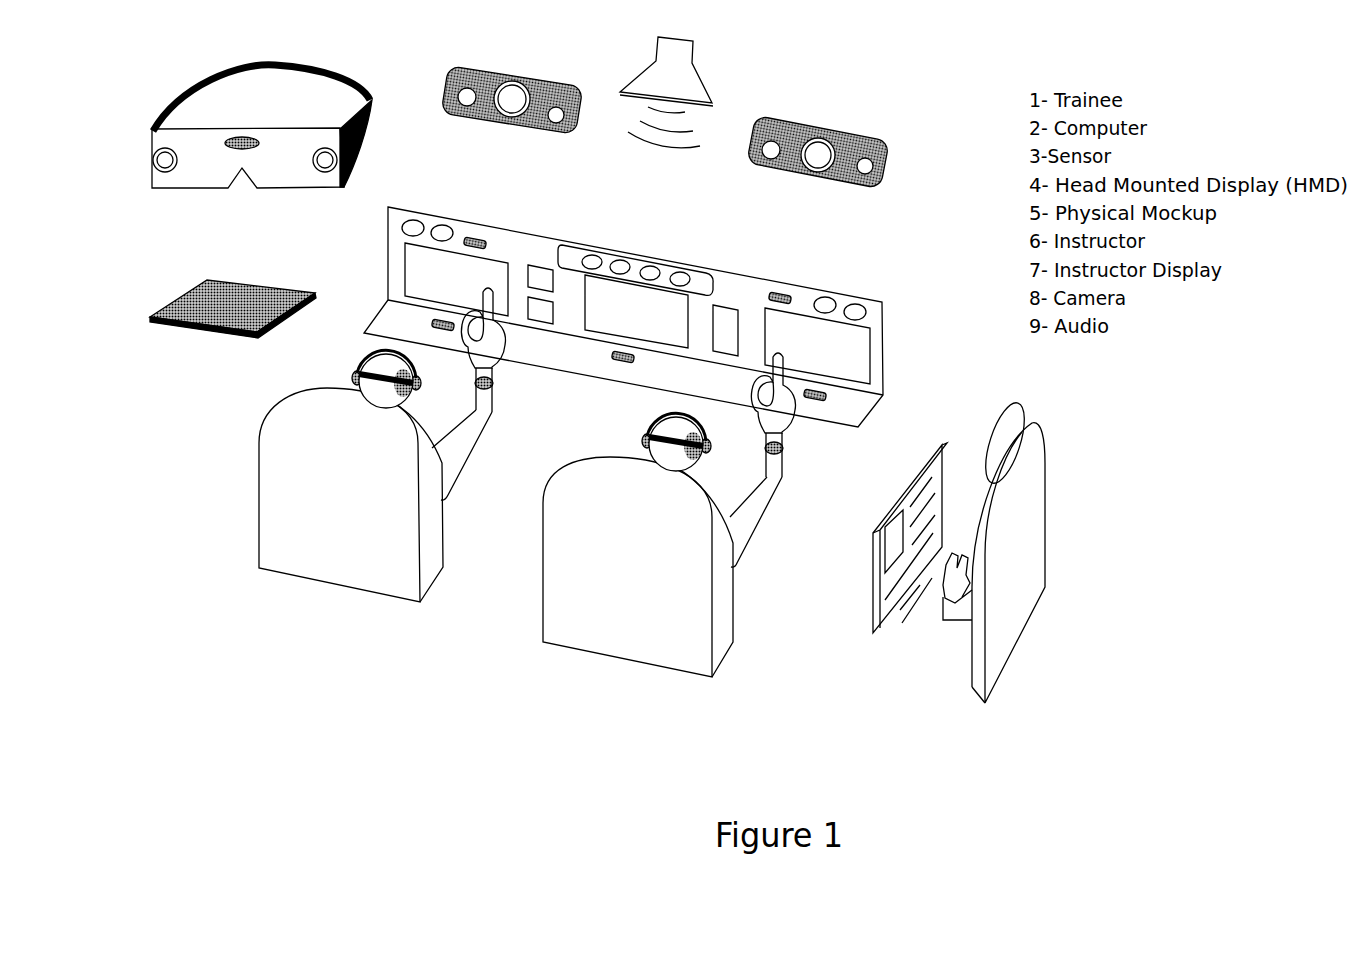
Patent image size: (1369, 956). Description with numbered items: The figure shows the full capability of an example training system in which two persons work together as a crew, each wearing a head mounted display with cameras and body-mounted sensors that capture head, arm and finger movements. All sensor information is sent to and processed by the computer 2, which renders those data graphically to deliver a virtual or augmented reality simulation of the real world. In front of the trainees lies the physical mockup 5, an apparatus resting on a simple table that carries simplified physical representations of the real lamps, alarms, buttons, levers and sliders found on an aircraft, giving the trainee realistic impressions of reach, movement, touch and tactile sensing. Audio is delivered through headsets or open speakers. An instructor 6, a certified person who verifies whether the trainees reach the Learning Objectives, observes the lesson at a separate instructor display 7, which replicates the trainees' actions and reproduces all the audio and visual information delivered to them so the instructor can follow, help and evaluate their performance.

The computer 2 is at (233, 318).
The physical mockup 5 is at (622, 317).
The instructor 6 is at (994, 541).
The instructor display 7 is at (909, 538).